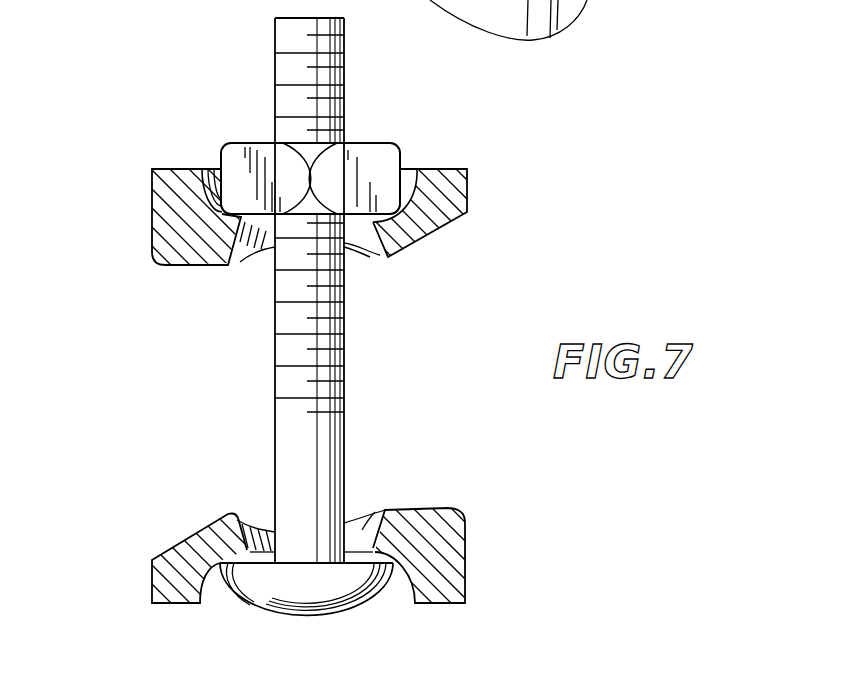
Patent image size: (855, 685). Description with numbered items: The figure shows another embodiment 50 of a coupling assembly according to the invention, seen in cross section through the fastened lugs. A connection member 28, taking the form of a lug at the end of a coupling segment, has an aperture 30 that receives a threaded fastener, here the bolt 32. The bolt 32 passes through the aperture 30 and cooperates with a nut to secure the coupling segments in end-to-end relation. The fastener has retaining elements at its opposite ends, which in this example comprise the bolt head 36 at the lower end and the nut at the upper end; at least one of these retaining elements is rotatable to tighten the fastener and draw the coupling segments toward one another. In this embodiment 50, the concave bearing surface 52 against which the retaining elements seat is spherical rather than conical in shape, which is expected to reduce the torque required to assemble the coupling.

The invention embodiment 50 is at (160, 76).
The connection member 28 is at (158, 215).
The concave bearing surface 52 is at (407, 172).
The aperture 30 is at (367, 250).
The bolt 32 is at (328, 319).
The bolt head 36 is at (273, 582).